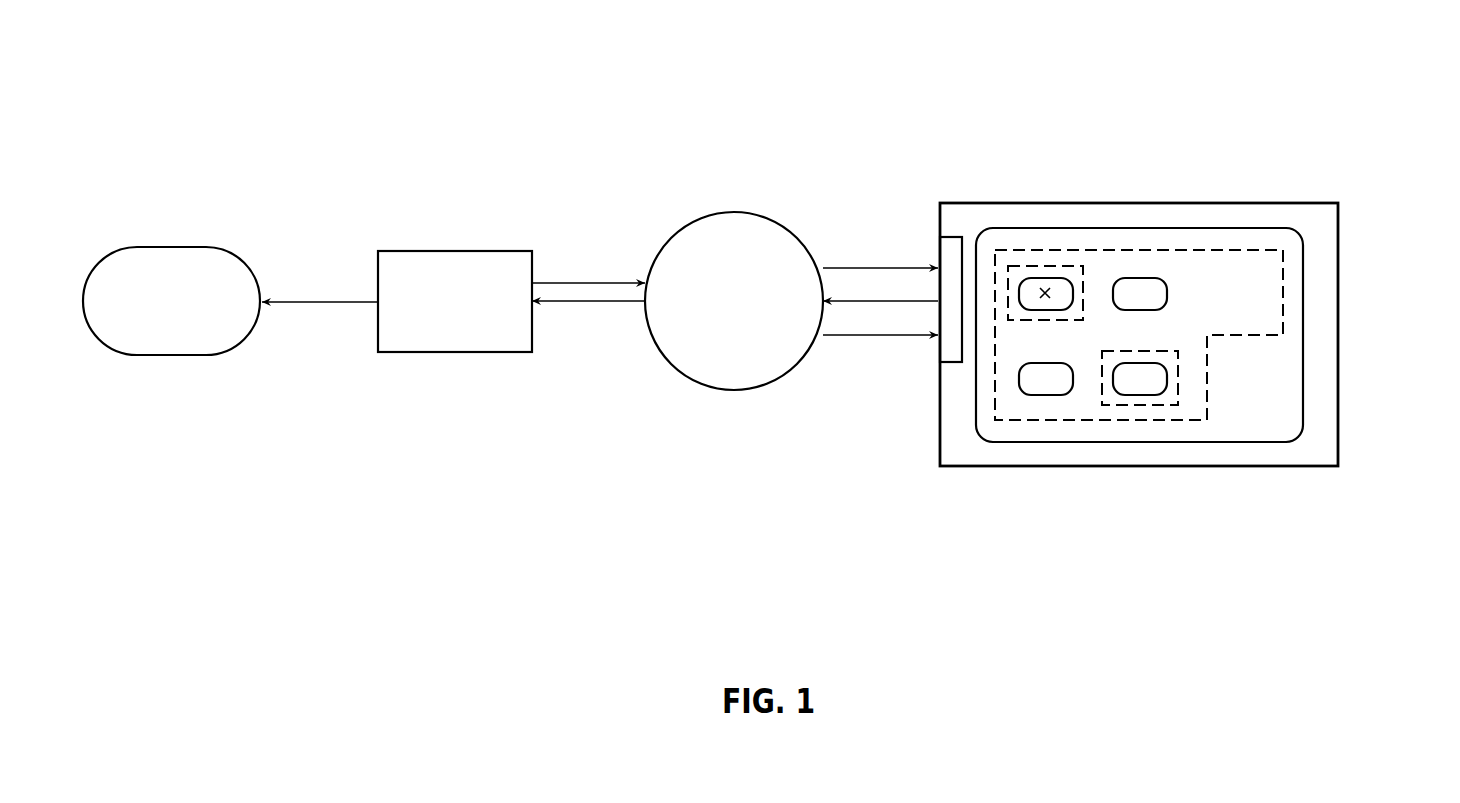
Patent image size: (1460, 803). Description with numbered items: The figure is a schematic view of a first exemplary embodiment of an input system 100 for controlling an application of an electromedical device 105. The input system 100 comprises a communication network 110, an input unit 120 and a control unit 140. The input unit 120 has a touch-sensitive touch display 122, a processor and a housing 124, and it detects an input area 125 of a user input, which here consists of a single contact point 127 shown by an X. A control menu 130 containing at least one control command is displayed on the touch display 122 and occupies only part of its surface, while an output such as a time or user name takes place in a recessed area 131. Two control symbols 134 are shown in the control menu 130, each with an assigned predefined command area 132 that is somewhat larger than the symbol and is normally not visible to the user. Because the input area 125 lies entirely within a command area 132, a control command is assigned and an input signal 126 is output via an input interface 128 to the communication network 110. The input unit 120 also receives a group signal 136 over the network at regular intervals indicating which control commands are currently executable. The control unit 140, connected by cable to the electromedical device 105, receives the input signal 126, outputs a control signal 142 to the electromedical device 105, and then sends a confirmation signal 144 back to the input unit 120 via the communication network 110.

The input system 100 is at (1372, 137).
The electromedical device 105 is at (194, 316).
The communication network 110 is at (754, 316).
The input unit 120 is at (1250, 218).
The touch display 122 is at (1302, 273).
The housing 124 is at (1338, 335).
The input area 125 is at (1058, 285).
The input signal 126 is at (583, 301).
The contact point 127 is at (1045, 292).
The input interface 128 is at (952, 350).
The control menu 130 is at (1077, 425).
The recessed area 131 is at (1235, 374).
The predefined command area 132 is at (1083, 272).
The control symbol 134 is at (1073, 292).
The group signal 136 is at (867, 335).
The control unit 140 is at (476, 315).
The control signal 142 is at (303, 302).
The confirmation signal 144 is at (585, 283).